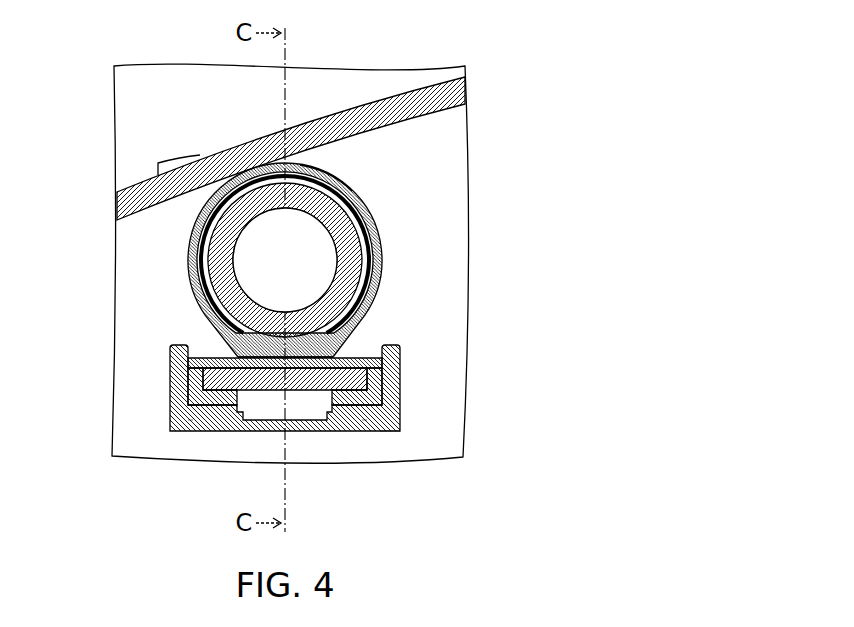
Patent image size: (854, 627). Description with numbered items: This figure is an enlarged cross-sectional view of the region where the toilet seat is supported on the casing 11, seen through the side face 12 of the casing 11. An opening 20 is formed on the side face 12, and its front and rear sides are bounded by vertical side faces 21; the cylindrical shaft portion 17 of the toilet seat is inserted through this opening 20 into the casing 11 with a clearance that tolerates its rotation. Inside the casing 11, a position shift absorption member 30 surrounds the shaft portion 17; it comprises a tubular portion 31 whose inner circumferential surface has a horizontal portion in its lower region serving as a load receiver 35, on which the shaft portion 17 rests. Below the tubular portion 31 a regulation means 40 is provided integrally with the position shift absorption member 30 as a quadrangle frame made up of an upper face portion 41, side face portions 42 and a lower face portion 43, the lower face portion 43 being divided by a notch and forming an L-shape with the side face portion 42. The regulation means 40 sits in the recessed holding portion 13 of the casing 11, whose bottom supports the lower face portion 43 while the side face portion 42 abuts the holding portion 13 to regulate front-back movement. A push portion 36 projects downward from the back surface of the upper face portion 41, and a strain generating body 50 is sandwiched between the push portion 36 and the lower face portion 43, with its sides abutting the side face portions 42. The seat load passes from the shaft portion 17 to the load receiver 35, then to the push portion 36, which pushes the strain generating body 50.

The casing 11 is at (418, 88).
The side face 12 is at (433, 177).
The holding portion 13 is at (390, 418).
The shaft portion 17 is at (307, 200).
The opening 20 is at (222, 313).
The side face 21 is at (208, 252).
The position shift absorption member 30 is at (386, 287).
The tubular portion 31 is at (340, 173).
The load receiver 35 is at (310, 318).
The push portion 36 is at (281, 366).
The regulation means 40 is at (380, 397).
The upper face portion 41 is at (360, 357).
The side face portion 42 is at (198, 382).
The lower face portion 43 is at (193, 430).
The strain generating body 50 is at (307, 382).